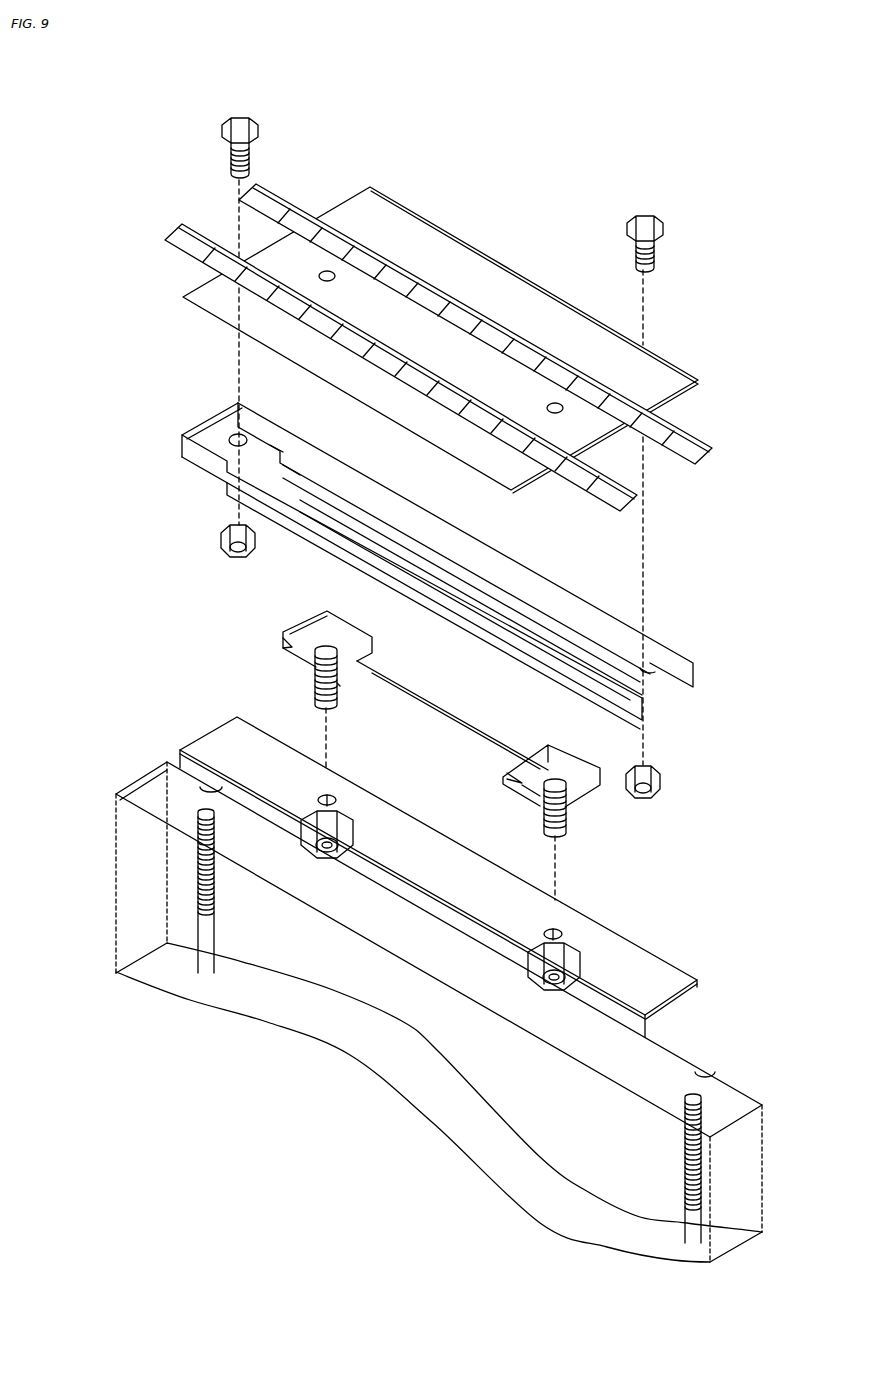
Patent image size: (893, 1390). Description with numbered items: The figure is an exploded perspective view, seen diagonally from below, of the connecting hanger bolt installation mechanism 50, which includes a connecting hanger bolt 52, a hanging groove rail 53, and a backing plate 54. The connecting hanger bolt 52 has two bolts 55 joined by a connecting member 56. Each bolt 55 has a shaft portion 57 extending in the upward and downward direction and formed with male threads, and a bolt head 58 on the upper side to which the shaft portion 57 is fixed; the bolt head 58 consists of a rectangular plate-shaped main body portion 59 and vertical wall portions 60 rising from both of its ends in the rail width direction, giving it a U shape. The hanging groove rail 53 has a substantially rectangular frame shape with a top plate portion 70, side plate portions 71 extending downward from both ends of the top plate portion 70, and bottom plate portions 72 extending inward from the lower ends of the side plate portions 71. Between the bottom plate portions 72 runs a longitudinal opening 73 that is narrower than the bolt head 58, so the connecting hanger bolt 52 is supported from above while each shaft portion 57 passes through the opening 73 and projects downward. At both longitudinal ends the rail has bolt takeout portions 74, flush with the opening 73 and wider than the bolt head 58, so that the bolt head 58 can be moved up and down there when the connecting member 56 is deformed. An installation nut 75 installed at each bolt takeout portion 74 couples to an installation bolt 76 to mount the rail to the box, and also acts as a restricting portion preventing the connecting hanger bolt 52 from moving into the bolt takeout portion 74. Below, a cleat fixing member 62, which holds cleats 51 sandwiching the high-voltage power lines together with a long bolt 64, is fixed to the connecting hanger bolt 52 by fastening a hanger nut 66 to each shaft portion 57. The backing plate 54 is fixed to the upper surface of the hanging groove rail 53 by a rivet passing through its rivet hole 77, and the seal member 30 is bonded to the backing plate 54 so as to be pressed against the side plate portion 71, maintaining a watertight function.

The seal member 30 is at (598, 488).
The connecting hanger bolt installation mechanism 50 is at (506, 191).
The cleat 51 is at (235, 1005).
The connecting hanger bolt 52 is at (402, 728).
The hanging groove rail 53 is at (590, 600).
The backing plate 54 is at (600, 323).
The bolt 55 is at (340, 686).
The connecting member 56 is at (452, 736).
The shaft portion 57 is at (315, 690).
The bolt head 58 is at (373, 645).
The main body portion 59 is at (307, 620).
The vertical wall portion 60 is at (347, 630).
The cleat fixing member 62 is at (628, 943).
The long bolt 64 is at (216, 905).
The hanger nut 66 is at (354, 830).
The top plate portion 70 is at (215, 420).
The side plate portion 71 is at (306, 452).
The bottom plate portion 72 is at (292, 523).
The opening 73 is at (438, 583).
The bolt takeout portion 74 is at (255, 450).
The installation nut 75 is at (221, 539).
The installation bolt 76 is at (231, 156).
The rivet hole 77 is at (316, 276).